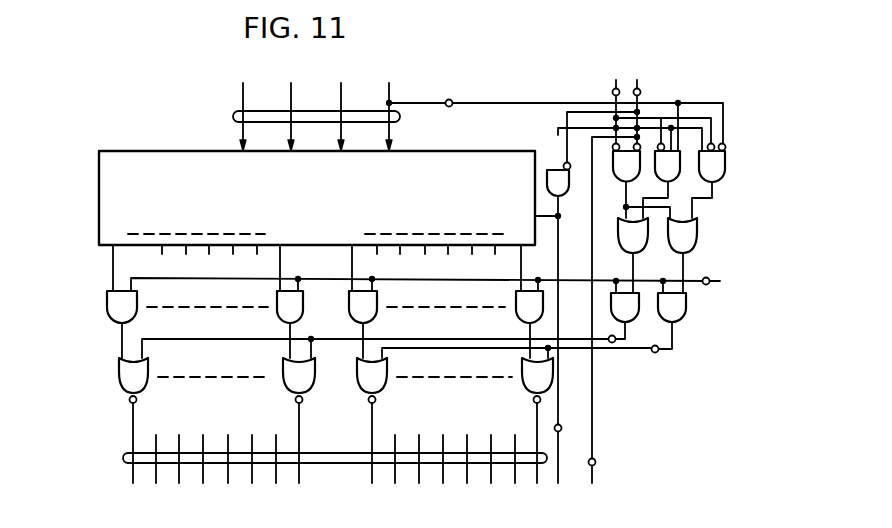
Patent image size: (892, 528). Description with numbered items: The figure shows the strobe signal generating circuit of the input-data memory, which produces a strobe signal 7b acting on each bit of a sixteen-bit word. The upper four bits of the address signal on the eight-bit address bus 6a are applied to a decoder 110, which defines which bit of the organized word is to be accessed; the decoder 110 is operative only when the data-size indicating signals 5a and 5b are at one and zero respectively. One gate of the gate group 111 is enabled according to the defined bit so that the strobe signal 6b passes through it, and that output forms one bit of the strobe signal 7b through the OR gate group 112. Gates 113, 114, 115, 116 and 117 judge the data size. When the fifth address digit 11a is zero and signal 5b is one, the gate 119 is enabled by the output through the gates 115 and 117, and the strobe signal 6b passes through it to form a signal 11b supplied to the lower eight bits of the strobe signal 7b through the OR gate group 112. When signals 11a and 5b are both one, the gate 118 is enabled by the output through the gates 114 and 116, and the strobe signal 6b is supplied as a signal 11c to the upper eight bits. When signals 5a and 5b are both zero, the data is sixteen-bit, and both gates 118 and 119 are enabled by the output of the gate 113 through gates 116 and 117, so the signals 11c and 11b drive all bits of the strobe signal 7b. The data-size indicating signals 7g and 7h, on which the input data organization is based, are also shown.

The decoder 110 is at (99, 192).
The address bus 6a is at (233, 114).
The signal on the fifth bit of the address signal 11a is at (449, 99).
The data-size indicating signal 5a is at (612, 92).
The data-size indicating signal 5b is at (641, 92).
The gate 113 is at (613, 158).
The gate 114 is at (678, 180).
The gate 115 is at (725, 164).
The gate 116 is at (618, 234).
The gate 117 is at (697, 232).
The strobe signal 6b is at (709, 284).
The gate 118 is at (639, 306).
The gate 119 is at (686, 304).
The signal 11c is at (612, 343).
The signal 11b is at (655, 353).
The gate group 111 is at (107, 306).
The OR gate group 112 is at (119, 382).
The strobe signal 7b is at (123, 456).
The data-size indicating signal 7g is at (562, 427).
The data-size indicating signal 7h is at (596, 462).